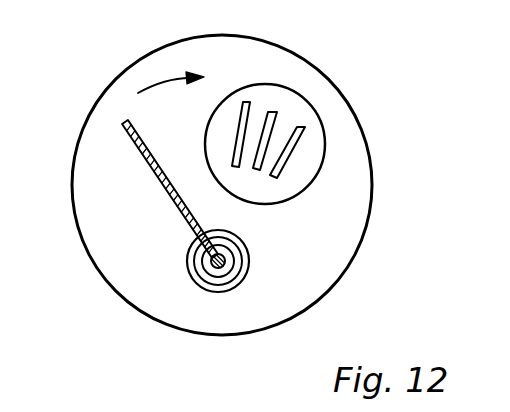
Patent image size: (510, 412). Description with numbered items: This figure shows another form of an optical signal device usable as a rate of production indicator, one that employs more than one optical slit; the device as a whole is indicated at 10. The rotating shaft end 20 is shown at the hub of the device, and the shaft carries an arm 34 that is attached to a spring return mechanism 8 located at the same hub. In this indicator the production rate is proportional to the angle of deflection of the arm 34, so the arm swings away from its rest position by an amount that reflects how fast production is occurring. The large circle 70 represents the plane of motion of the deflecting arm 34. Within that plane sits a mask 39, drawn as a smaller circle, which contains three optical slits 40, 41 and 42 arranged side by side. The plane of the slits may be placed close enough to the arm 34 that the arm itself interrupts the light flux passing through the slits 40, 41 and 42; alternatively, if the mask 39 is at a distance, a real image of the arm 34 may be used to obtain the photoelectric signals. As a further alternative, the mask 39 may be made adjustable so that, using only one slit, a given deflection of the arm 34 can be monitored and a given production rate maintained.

The gauge assembly 10 is at (162, 83).
The circle showing plane of motion 70 is at (262, 43).
The mask 39 is at (313, 157).
The optical slit 40 is at (250, 102).
The optical slit 41 is at (277, 112).
The optical slit 42 is at (305, 127).
The spring return mechanism 8 is at (187, 253).
The rotating shaft end 20 is at (222, 262).
The arm 34 is at (120, 128).